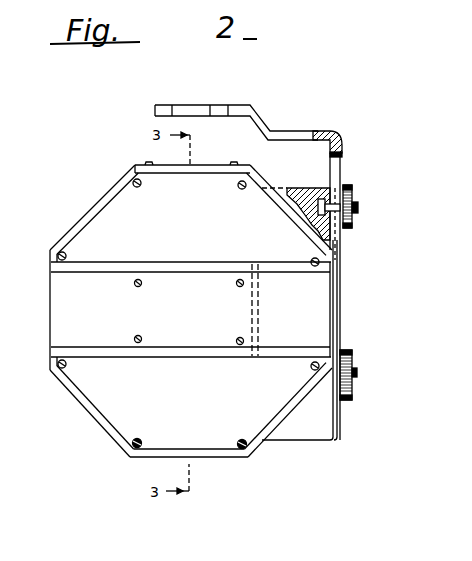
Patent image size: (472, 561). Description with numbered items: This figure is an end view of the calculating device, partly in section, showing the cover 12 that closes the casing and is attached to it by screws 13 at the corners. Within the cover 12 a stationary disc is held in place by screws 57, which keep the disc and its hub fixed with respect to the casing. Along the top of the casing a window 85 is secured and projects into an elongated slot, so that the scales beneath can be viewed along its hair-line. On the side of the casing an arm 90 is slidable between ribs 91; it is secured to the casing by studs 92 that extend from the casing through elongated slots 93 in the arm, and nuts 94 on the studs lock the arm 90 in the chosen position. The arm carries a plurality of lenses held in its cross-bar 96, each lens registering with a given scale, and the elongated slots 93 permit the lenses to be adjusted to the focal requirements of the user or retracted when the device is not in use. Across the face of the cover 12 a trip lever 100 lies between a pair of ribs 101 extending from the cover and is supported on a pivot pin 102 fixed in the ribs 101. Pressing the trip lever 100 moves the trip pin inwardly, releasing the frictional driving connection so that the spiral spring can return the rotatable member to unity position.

The cover 12 is at (259, 428).
The screws 13 is at (122, 445).
The screws 57 is at (143, 285).
The window 85 is at (207, 165).
The arm 90 is at (342, 141).
The ribs 91 is at (336, 255).
The studs 92 is at (358, 206).
The elongated slots 93 is at (340, 166).
The nuts 94 is at (352, 190).
The cross-bar 96 is at (166, 111).
The trip lever 100 is at (322, 303).
The ribs 101 is at (222, 265).
The pivot pin 102 is at (257, 325).